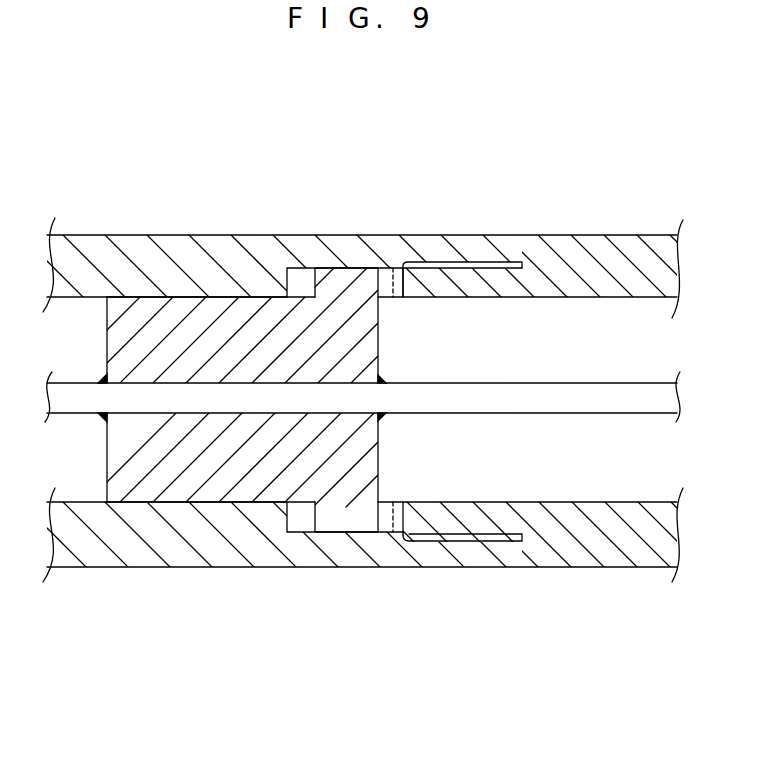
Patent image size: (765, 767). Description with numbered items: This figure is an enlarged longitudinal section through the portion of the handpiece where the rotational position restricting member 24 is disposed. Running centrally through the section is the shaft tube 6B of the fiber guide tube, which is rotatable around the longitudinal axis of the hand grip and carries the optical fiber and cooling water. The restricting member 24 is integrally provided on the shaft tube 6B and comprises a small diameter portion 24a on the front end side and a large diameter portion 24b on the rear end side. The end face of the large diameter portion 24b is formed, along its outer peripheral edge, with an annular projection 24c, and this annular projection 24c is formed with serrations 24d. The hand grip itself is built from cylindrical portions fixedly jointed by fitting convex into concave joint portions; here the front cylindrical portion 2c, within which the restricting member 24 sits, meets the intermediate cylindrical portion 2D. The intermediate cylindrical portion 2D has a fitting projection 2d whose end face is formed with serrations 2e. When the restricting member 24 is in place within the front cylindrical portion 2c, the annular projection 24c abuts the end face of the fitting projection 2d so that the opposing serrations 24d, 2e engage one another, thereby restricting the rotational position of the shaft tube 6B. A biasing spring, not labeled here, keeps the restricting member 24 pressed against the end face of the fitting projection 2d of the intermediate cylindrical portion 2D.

The front cylindrical portion 2c is at (115, 538).
The fitting projection 2d is at (455, 292).
The intermediate cylindrical portion 2D is at (524, 430).
The serrations 2e is at (393, 272).
The shaft tube 6B is at (522, 390).
The rotational position restricting member 24 is at (279, 405).
The small diameter portion 24a is at (197, 323).
The large diameter portion 24b is at (327, 305).
The annular projection 24c is at (388, 267).
The serrations 24d is at (412, 263).